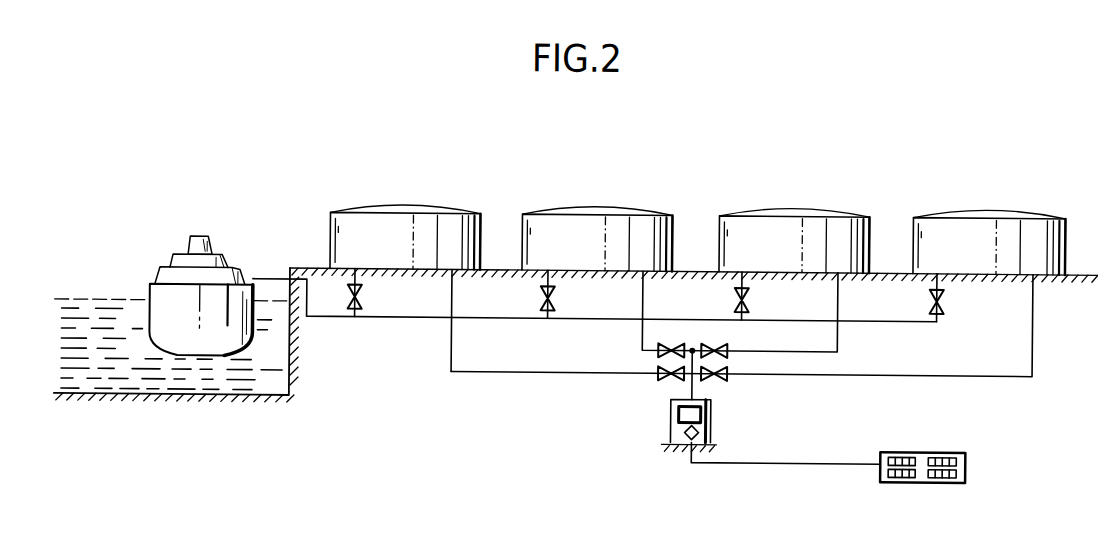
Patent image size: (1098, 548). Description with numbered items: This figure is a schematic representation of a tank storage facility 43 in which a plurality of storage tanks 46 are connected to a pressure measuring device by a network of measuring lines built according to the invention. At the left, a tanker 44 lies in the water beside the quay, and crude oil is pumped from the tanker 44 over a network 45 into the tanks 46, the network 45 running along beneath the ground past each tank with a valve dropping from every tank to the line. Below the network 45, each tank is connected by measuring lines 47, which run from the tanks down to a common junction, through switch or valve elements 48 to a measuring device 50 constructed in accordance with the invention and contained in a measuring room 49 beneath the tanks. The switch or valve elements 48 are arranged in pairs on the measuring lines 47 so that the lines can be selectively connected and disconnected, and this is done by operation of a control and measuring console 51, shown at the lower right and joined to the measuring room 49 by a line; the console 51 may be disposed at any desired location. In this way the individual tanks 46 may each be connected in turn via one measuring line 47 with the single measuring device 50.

The storage facility 43 is at (697, 189).
The tanker 44 is at (170, 297).
The network 45 is at (489, 316).
The storage tanks 46 is at (447, 224).
The measuring lines 47 is at (642, 330).
The switch or valve elements 48 is at (700, 354).
The measuring room 49 is at (677, 434).
The measuring device 50 is at (680, 414).
The control and measuring console 51 is at (971, 459).